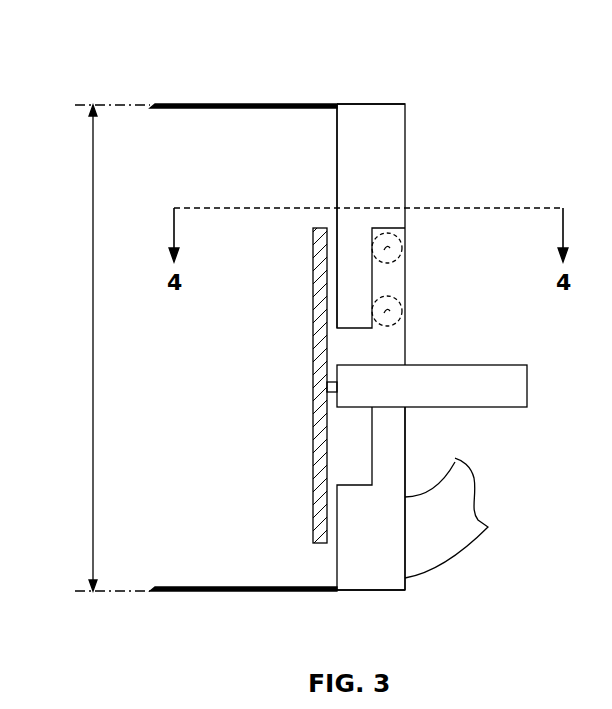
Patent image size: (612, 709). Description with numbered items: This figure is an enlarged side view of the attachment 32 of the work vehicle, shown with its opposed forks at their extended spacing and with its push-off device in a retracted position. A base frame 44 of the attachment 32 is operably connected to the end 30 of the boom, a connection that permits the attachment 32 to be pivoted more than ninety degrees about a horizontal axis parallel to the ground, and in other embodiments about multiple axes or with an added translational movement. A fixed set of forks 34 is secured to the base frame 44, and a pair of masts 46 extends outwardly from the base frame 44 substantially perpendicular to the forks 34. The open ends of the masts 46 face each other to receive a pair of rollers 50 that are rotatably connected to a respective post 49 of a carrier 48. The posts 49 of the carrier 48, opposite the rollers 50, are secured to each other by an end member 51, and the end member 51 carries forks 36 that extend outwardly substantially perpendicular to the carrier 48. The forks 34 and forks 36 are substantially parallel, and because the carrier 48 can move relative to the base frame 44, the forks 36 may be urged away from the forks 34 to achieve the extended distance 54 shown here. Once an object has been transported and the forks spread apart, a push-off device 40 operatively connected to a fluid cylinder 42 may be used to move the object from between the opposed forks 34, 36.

The end of boom 30 is at (458, 555).
The attachment 32 is at (462, 76).
The fixed set of forks 34 is at (198, 591).
The forks 36 is at (216, 104).
The push-off device 40 is at (313, 410).
The fluid cylinder 42 is at (500, 365).
The base frame 44 is at (405, 553).
The masts 46 is at (405, 424).
The carrier 48 is at (405, 140).
The post 49 is at (337, 148).
The rollers 50 is at (402, 276).
The end member 51 is at (376, 104).
The extended distance 54 is at (92, 348).